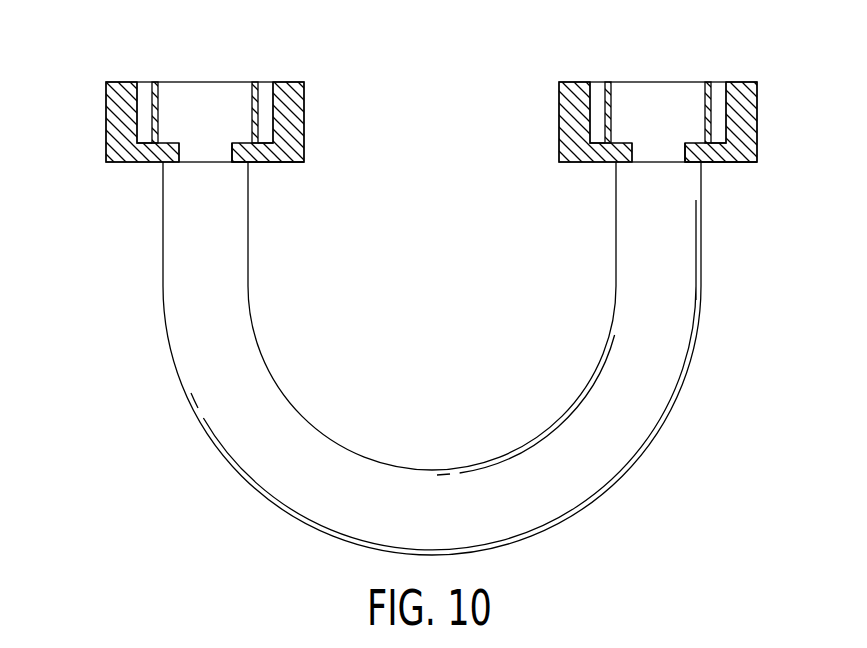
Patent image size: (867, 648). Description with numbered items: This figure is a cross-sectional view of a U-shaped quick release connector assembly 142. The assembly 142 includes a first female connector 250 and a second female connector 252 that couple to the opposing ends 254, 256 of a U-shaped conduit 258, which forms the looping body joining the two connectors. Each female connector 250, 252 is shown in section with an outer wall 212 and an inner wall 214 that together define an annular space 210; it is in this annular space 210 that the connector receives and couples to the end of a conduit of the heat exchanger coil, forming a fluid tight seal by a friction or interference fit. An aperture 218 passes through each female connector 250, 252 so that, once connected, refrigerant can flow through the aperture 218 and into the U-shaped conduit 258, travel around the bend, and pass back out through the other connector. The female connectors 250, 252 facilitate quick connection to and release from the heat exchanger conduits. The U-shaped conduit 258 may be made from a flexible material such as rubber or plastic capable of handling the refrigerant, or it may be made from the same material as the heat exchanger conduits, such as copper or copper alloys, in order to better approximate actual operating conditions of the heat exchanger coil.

The U-shaped quick release connector assembly 142 is at (385, 55).
The annular space 210 is at (148, 95).
The outer wall 212 is at (118, 135).
The inner wall 214 is at (157, 113).
The aperture 218 is at (203, 148).
The first female connector 250 is at (270, 175).
The second female connector 252 is at (590, 177).
The end of the U-shaped conduit 254 is at (142, 177).
The end of the U-shaped conduit 256 is at (720, 177).
The U-shaped conduit 258 is at (363, 460).